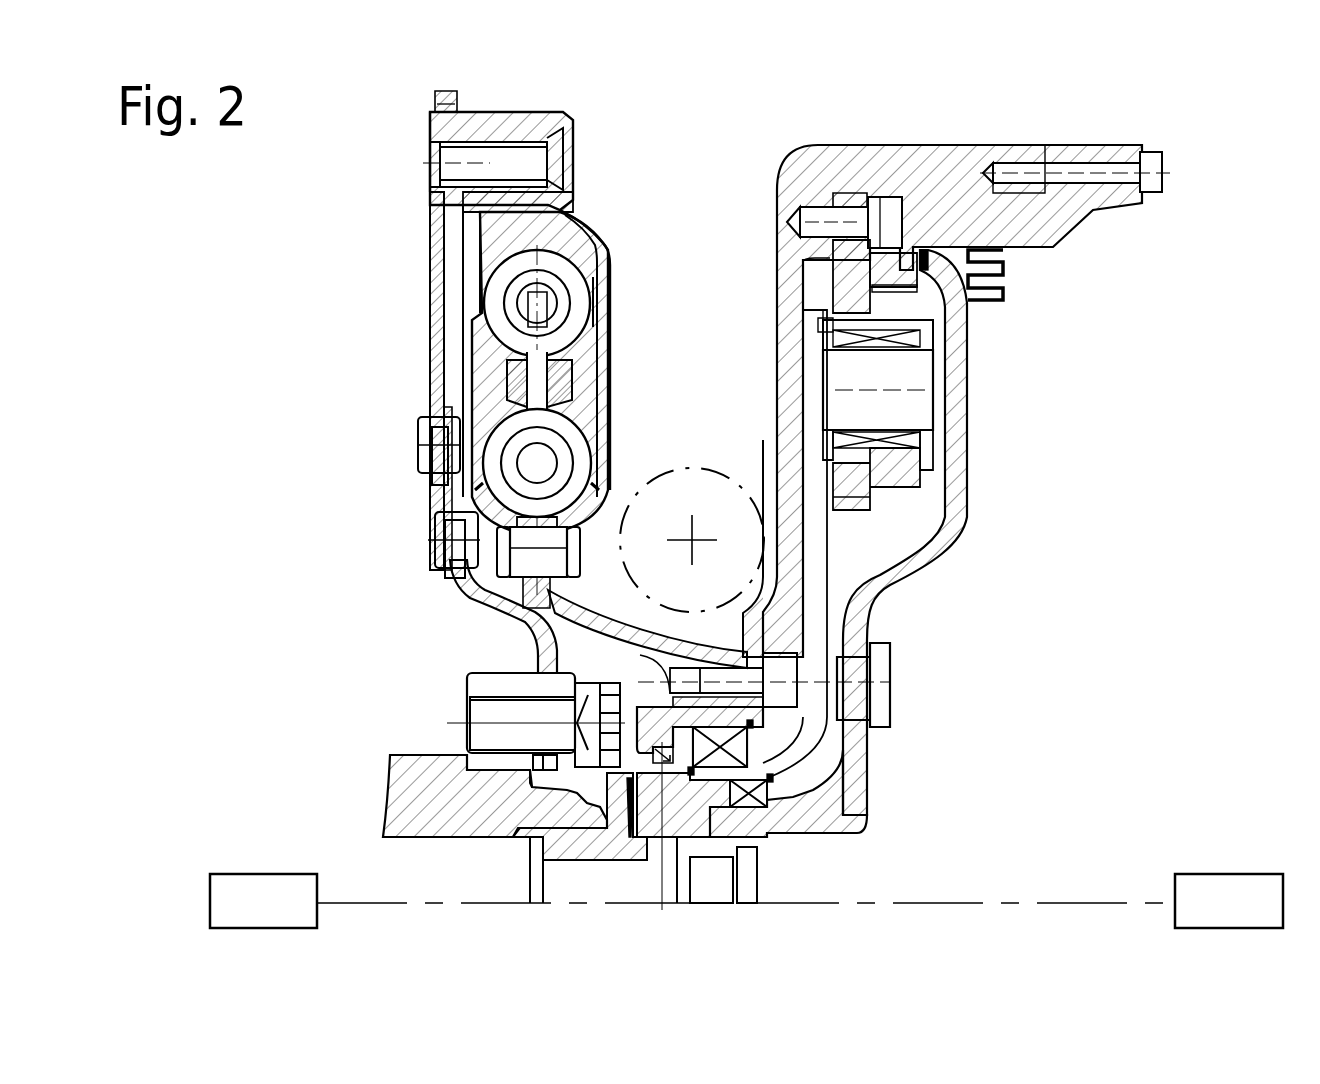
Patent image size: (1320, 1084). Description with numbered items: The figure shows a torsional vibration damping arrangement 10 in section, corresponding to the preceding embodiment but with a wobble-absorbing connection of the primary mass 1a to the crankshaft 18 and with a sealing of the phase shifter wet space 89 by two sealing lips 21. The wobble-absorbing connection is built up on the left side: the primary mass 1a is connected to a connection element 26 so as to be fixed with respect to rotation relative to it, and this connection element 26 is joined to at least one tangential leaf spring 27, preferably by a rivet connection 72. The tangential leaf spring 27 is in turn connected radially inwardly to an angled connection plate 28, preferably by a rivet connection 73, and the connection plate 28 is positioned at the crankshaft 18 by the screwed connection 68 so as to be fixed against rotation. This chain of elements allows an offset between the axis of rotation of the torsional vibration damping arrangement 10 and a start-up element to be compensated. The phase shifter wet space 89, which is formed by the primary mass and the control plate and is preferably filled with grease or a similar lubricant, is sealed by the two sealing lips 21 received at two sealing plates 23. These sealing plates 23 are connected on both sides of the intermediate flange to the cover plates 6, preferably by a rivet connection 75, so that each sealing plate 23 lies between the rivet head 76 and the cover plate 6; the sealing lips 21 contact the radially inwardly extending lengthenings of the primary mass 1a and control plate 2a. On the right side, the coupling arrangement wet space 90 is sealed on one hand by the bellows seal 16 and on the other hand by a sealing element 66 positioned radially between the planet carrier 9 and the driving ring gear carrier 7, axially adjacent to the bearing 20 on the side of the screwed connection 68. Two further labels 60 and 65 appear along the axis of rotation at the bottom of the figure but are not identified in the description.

The torsional vibration damping arrangement 10 is at (707, 172).
The primary mass 1a is at (472, 236).
The control plate 2a is at (585, 222).
The phase shifter wet space 89 is at (590, 358).
The cover plate 6 is at (510, 392).
The sealing lips 21 is at (470, 487).
The connection element 26 is at (440, 388).
The rivet connection 72 is at (430, 433).
The tangential leaf spring 27 is at (445, 500).
The sealing plates 23 is at (445, 548).
The rivet connection 73 is at (440, 558).
The rivet connection 75 is at (545, 548).
The rivet head 76 is at (563, 582).
The angled connection plate 28 is at (478, 605).
The screwed connection 68 is at (500, 713).
The crankshaft 18 is at (430, 795).
The bellows seal 16 is at (1003, 293).
The driving ring gear carrier 7 is at (785, 360).
The coupling arrangement wet space 90 is at (890, 535).
The bearing 20 is at (740, 748).
The planet carrier 9 is at (802, 762).
The sealing element 66 is at (665, 843).
The motor 60 is at (692, 901).
The wheel 65 is at (1229, 901).